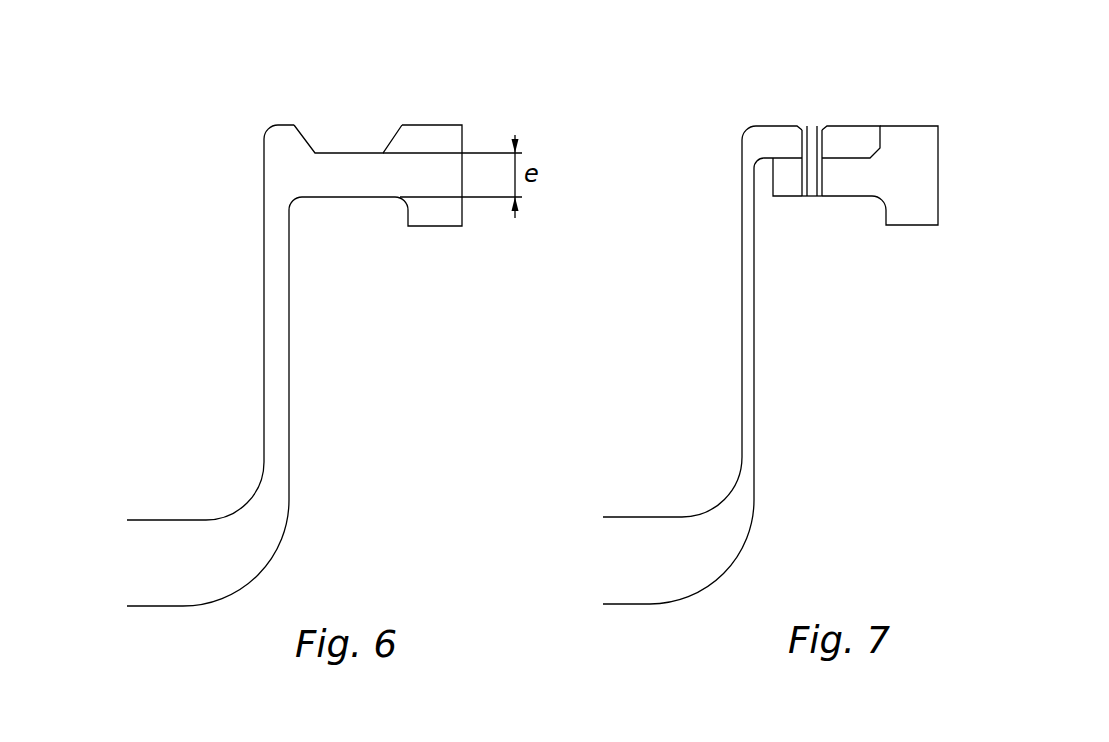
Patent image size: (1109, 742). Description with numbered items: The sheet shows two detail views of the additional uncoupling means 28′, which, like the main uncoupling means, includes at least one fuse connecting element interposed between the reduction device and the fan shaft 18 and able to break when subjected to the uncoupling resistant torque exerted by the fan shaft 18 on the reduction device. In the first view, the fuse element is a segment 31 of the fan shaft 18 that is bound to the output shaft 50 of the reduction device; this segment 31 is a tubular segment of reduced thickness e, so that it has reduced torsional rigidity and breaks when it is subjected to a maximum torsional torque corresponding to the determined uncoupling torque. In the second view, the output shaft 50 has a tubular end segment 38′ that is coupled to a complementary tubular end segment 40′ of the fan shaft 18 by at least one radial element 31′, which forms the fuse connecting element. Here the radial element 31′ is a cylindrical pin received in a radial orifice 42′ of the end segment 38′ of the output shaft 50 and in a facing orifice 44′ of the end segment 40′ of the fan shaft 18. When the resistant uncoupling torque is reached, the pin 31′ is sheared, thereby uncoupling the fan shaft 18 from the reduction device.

In FIG. 6, the fan shaft 18 is at (172, 545).
In FIG. 7, the fan shaft 18 is at (648, 545).
In FIG. 6, the additional uncoupling means 28′ is at (555, 84).
In FIG. 7, the additional uncoupling means 28′ is at (939, 84).
In FIG. 6, the segment of the fan shaft 31 is at (350, 172).
In FIG. 6, the output shaft 50 is at (448, 135).
In FIG. 7, the output shaft 50 is at (926, 195).
In FIG. 7, the radial element 31′ is at (812, 138).
In FIG. 7, the complementary tubular end segment of the fan shaft 40′ is at (790, 138).
In FIG. 7, the orifice 44′ is at (822, 143).
In FIG. 7, the tubular end segment of the output shaft 38′ is at (860, 177).
In FIG. 7, the radial orifice 42′ is at (822, 192).